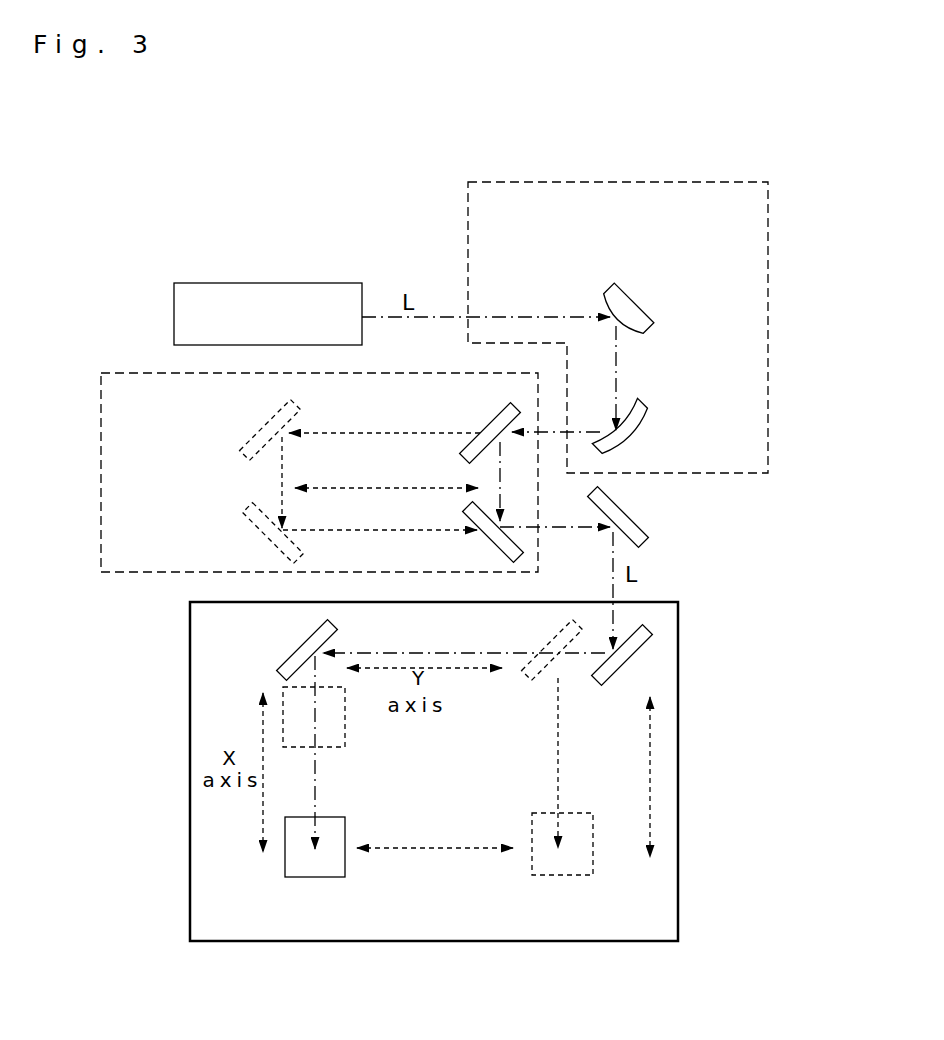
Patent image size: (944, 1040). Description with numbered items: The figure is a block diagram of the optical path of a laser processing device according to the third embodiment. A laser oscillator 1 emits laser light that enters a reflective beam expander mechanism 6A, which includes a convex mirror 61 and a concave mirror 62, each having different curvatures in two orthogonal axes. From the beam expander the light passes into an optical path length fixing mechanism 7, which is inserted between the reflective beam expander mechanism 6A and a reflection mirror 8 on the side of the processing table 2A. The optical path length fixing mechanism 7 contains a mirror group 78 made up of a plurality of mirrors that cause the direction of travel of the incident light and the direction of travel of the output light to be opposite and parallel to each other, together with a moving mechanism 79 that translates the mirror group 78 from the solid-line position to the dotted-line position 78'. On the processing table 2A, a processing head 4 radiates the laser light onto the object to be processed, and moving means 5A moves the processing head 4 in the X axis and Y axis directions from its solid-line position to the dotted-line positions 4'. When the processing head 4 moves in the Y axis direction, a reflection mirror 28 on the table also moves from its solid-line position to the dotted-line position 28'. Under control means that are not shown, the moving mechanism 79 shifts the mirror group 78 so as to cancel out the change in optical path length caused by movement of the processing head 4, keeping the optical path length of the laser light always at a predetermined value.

The laser oscillator 1 is at (262, 283).
The reflective beam expander mechanism 6A is at (770, 253).
The convex mirror 61 is at (648, 318).
The concave mirror 62 is at (647, 425).
The optical path length fixing mechanism 7 is at (100, 463).
The mirror group 78 is at (465, 474).
The position of mirror group 78' is at (240, 474).
The moving mechanism 79 is at (410, 487).
The processing table 2A is at (192, 885).
The reflection mirror 28 is at (280, 650).
The position of reflection mirror 28' is at (518, 648).
The reflection mirror 8 is at (640, 648).
The processing head 4 is at (344, 832).
The positions of processing head 4' is at (458, 781).
The moving means 5A is at (265, 783).